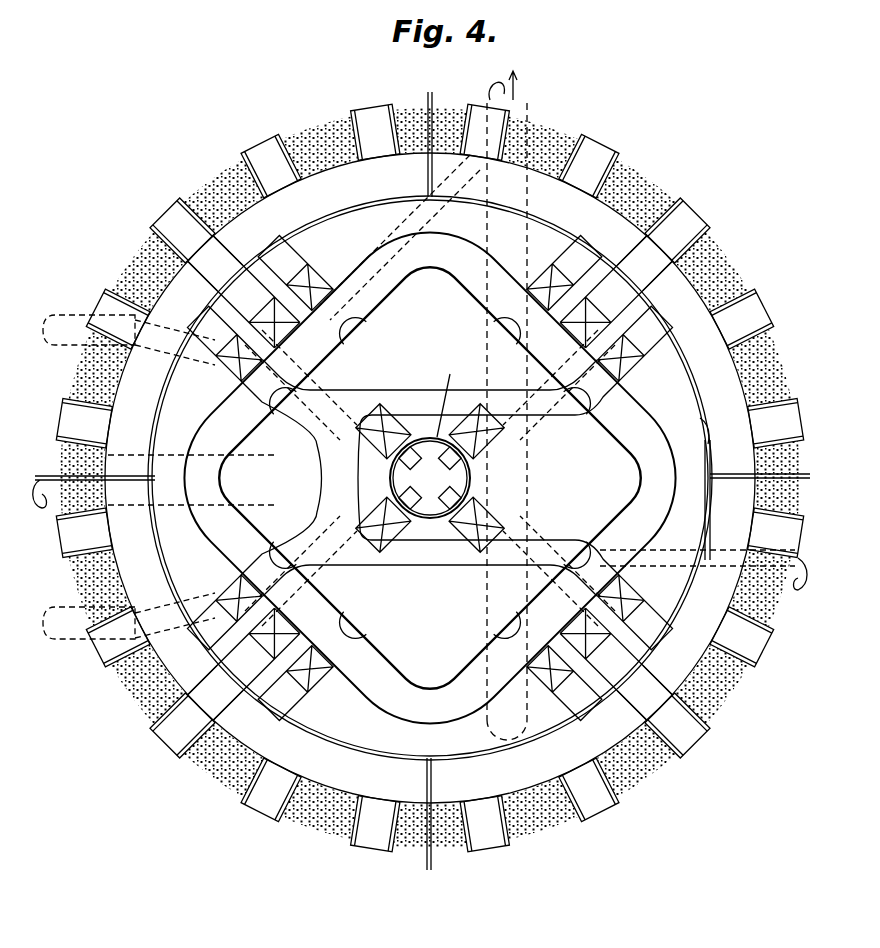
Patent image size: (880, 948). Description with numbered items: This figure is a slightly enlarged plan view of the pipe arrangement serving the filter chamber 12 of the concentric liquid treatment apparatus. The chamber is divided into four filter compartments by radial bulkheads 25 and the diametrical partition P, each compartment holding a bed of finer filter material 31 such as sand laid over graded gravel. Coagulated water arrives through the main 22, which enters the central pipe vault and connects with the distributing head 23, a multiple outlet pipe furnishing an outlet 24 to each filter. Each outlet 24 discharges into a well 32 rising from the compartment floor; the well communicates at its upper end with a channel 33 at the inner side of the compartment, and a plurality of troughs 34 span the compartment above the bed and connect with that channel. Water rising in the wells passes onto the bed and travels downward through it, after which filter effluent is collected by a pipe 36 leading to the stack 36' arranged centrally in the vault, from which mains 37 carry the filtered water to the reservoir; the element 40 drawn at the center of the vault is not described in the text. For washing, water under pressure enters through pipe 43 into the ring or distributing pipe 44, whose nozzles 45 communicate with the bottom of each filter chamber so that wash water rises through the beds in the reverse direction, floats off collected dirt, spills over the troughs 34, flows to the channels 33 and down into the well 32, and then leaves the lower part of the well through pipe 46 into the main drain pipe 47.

The filter chamber 12 is at (637, 773).
The main 22 is at (417, 478).
The distributing head 23 is at (322, 520).
The outlet 24 is at (240, 377).
The radial bulkhead 25 is at (432, 95).
The filter material 31 is at (205, 767).
The well 32 is at (757, 682).
The channel 33 is at (397, 185).
The trough 34 is at (378, 108).
The pipe 36 is at (423, 478).
The stack 36' is at (457, 394).
The main 37 is at (70, 316).
The central tube 40 is at (430, 478).
The pipe 43 is at (800, 595).
The distributing pipe 44 is at (640, 472).
The nozzle 45 is at (175, 210).
The pipe 46 is at (296, 258).
The main drain pipe 47 is at (527, 508).
The partition P is at (421, 498).